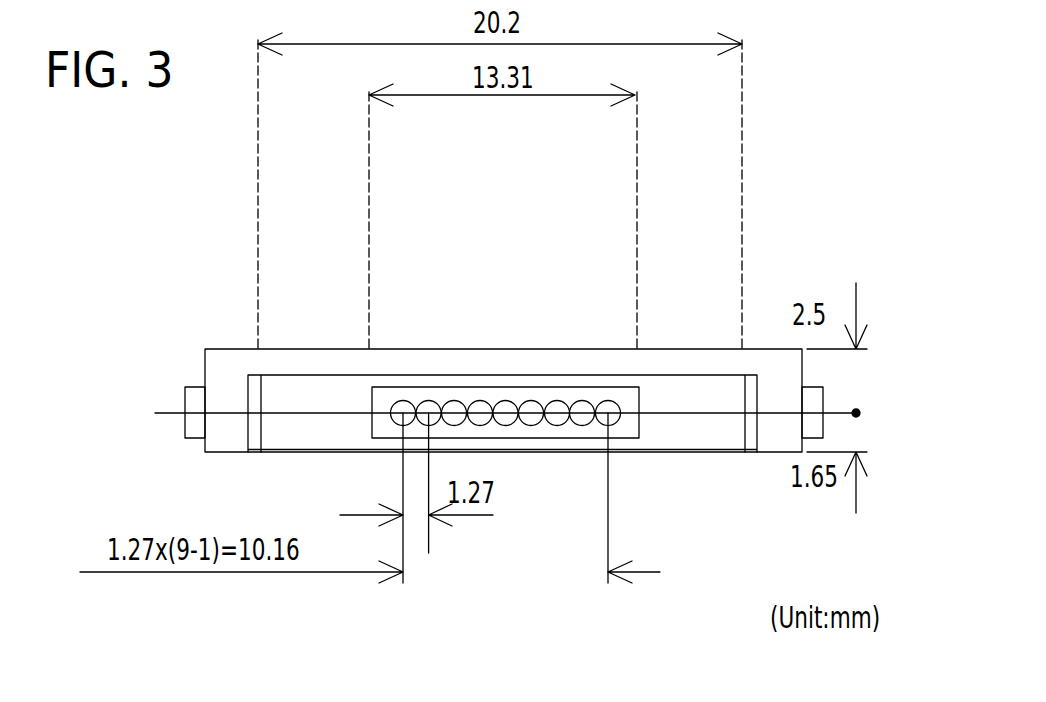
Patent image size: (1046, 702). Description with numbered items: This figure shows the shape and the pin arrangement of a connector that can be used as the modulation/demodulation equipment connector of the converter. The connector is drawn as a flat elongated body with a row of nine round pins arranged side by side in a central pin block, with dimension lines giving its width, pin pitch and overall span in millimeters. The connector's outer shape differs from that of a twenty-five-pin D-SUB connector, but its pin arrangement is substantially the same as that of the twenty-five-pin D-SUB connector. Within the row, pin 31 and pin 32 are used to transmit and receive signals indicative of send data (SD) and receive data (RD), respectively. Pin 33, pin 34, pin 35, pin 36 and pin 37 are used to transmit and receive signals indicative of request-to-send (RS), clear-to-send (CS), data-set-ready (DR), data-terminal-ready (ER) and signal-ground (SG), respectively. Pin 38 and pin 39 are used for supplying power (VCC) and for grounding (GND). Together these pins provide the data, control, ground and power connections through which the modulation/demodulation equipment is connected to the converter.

The pin 31 is at (608, 413).
The pin 32 is at (582, 413).
The pin 33 is at (557, 413).
The pin 34 is at (531, 413).
The pin 35 is at (506, 413).
The pin 36 is at (454, 413).
The pin 37 is at (480, 413).
The pin 38 is at (429, 413).
The pin 39 is at (403, 413).